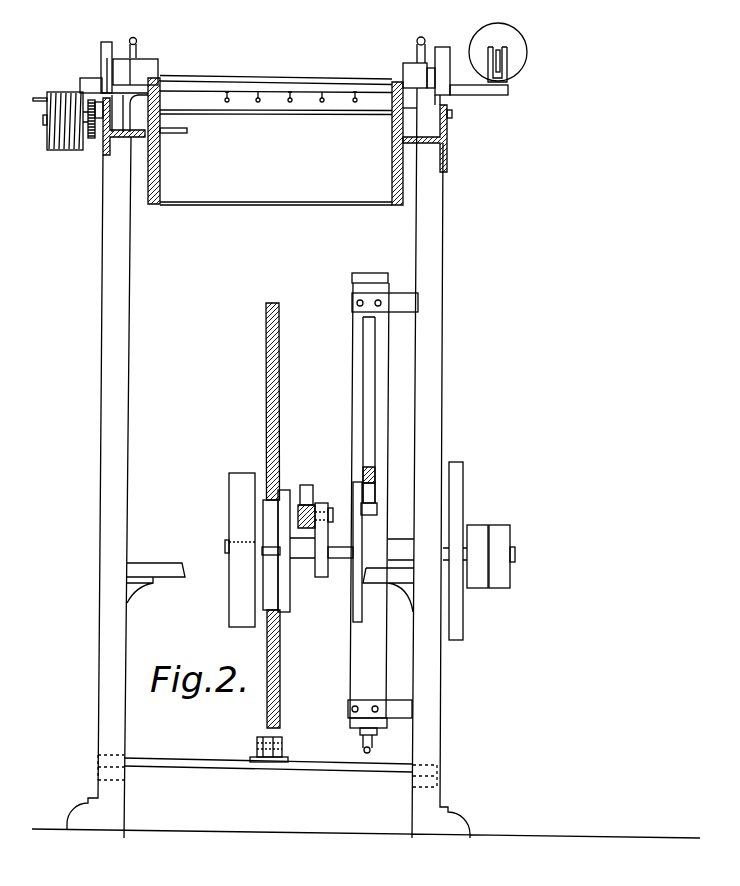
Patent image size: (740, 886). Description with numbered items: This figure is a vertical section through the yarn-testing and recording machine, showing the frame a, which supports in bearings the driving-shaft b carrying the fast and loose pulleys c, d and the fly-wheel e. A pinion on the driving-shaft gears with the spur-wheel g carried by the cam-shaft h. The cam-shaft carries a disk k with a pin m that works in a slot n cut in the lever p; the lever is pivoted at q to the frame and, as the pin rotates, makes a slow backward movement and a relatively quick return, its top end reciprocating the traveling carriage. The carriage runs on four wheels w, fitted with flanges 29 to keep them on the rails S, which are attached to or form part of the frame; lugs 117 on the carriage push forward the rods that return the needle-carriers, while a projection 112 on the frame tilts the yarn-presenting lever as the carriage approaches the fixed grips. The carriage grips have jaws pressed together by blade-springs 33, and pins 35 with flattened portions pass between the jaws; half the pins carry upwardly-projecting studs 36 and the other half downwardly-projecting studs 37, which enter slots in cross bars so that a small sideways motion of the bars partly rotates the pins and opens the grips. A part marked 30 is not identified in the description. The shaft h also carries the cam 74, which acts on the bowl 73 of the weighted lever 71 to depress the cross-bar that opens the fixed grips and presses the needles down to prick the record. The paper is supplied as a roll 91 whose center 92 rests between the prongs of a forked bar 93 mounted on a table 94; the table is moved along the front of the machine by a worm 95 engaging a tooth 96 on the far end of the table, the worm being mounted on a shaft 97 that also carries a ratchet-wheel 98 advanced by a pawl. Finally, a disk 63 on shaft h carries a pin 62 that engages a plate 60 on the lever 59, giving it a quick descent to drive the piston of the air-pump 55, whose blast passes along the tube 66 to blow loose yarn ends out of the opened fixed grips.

The frame a is at (445, 352).
The bed rail 30 is at (275, 141).
The upwardly-projecting studs 36 is at (196, 94).
The pins 35 is at (196, 104).
The blade-springs 33 is at (318, 97).
The downwardly-projecting studs 37 is at (320, 107).
The projection 112 is at (178, 134).
The wheels w is at (103, 48).
The lugs 117 is at (135, 44).
The flanges 29 is at (130, 61).
The table 94 is at (84, 79).
The shaft 97 is at (84, 150).
The ratchet-wheel 98 is at (92, 140).
The tooth 96 is at (80, 93).
The worm 95 is at (62, 148).
The rails S is at (450, 108).
The roll 91 is at (520, 45).
The center of the roll 92 is at (500, 57).
The forked bar 93 is at (507, 82).
The lever p is at (265, 450).
The pivot q is at (285, 748).
The fly-wheel e is at (240, 490).
The driving-shaft b is at (225, 548).
The pin m is at (271, 555).
The slot n is at (283, 500).
The disk k is at (288, 608).
The cam 74 is at (321, 544).
The lever 71 is at (308, 494).
The bowl 73 is at (322, 505).
The disk 63 is at (353, 613).
The air-pump 55 is at (350, 680).
The lever 59 is at (375, 475).
The plate 60 is at (376, 493).
The pin 62 is at (369, 518).
The cam-shaft h is at (373, 550).
The tube 66 is at (362, 748).
The spur-wheel g is at (460, 489).
The loose pulley d is at (480, 527).
The fast pulley c is at (500, 527).